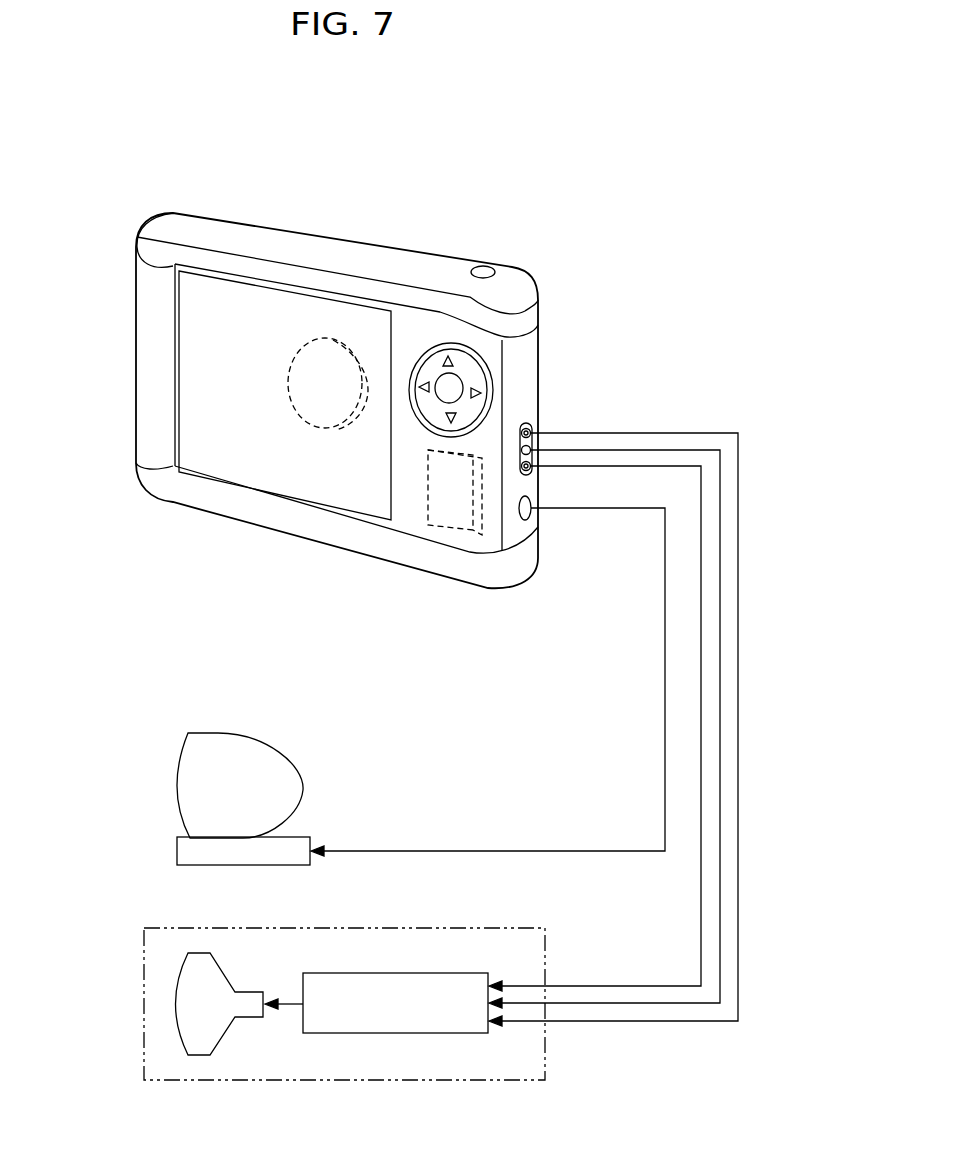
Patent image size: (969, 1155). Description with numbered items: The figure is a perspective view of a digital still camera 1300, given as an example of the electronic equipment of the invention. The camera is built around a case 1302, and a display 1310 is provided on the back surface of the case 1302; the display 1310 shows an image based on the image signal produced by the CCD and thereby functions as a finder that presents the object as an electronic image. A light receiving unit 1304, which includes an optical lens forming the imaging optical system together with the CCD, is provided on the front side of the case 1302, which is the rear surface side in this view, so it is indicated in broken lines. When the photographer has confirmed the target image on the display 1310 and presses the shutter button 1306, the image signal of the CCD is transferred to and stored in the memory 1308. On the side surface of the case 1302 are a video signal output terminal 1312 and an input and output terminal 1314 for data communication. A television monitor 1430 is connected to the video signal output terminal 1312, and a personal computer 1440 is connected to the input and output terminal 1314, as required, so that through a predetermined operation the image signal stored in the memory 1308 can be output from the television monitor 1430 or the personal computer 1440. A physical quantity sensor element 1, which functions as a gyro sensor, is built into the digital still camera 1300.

The digital still camera 1300 is at (380, 376).
The case 1302 is at (160, 257).
The light receiving unit 1304 is at (328, 337).
The shutter button 1306 is at (482, 267).
The memory 1308 is at (435, 533).
The display 1310 is at (277, 468).
The video signal output terminal 1312 is at (526, 430).
The input and output terminal for data communication 1314 is at (533, 516).
The physical quantity sensor element 1 is at (413, 507).
The television monitor 1430 is at (144, 996).
The personal computer 1440 is at (176, 770).